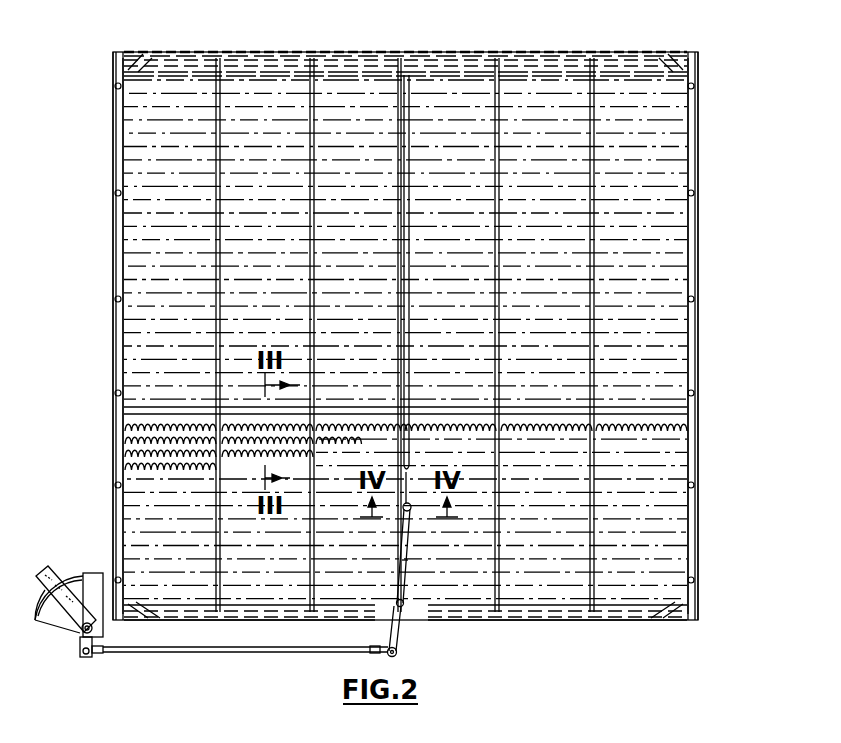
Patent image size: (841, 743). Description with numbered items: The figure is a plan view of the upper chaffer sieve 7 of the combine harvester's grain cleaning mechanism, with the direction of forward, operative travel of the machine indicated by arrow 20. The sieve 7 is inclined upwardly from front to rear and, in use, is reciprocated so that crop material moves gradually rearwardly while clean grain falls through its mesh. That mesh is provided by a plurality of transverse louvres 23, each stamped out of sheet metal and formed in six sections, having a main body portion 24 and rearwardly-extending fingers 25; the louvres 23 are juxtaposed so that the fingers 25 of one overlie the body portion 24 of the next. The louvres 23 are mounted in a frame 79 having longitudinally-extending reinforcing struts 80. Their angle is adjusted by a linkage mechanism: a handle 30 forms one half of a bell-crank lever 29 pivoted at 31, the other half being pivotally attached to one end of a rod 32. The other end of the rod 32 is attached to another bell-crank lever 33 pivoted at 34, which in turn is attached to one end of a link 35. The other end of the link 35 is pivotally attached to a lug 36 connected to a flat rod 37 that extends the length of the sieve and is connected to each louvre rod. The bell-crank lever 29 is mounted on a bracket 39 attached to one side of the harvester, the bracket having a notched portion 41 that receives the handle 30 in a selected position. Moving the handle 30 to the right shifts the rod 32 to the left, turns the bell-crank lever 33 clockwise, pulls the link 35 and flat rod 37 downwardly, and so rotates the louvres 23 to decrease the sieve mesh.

The arrow indicating direction of forward travel 20 is at (89, 80).
The transverse louvres 23 is at (128, 173).
The main body portion 24 is at (125, 421).
The rearwardly-extending fingers 25 is at (125, 440).
The notched portion 41 is at (686, 214).
The frame 79 is at (452, 64).
The longitudinally-extending reinforcing struts 80 is at (398, 100).
The upper chaffer sieve 7 is at (605, 621).
The lug 36 is at (410, 503).
The link 35 is at (413, 538).
The flat rod 37 is at (408, 563).
The pivot of second bell-crank lever 34 is at (388, 615).
The bell-crank lever 33 is at (401, 632).
The rod 32 is at (222, 650).
The pivot of first bell-crank lever 31 is at (95, 628).
The handle 30 is at (50, 572).
The bracket 39 is at (56, 628).
The bell-crank lever 29 is at (80, 656).